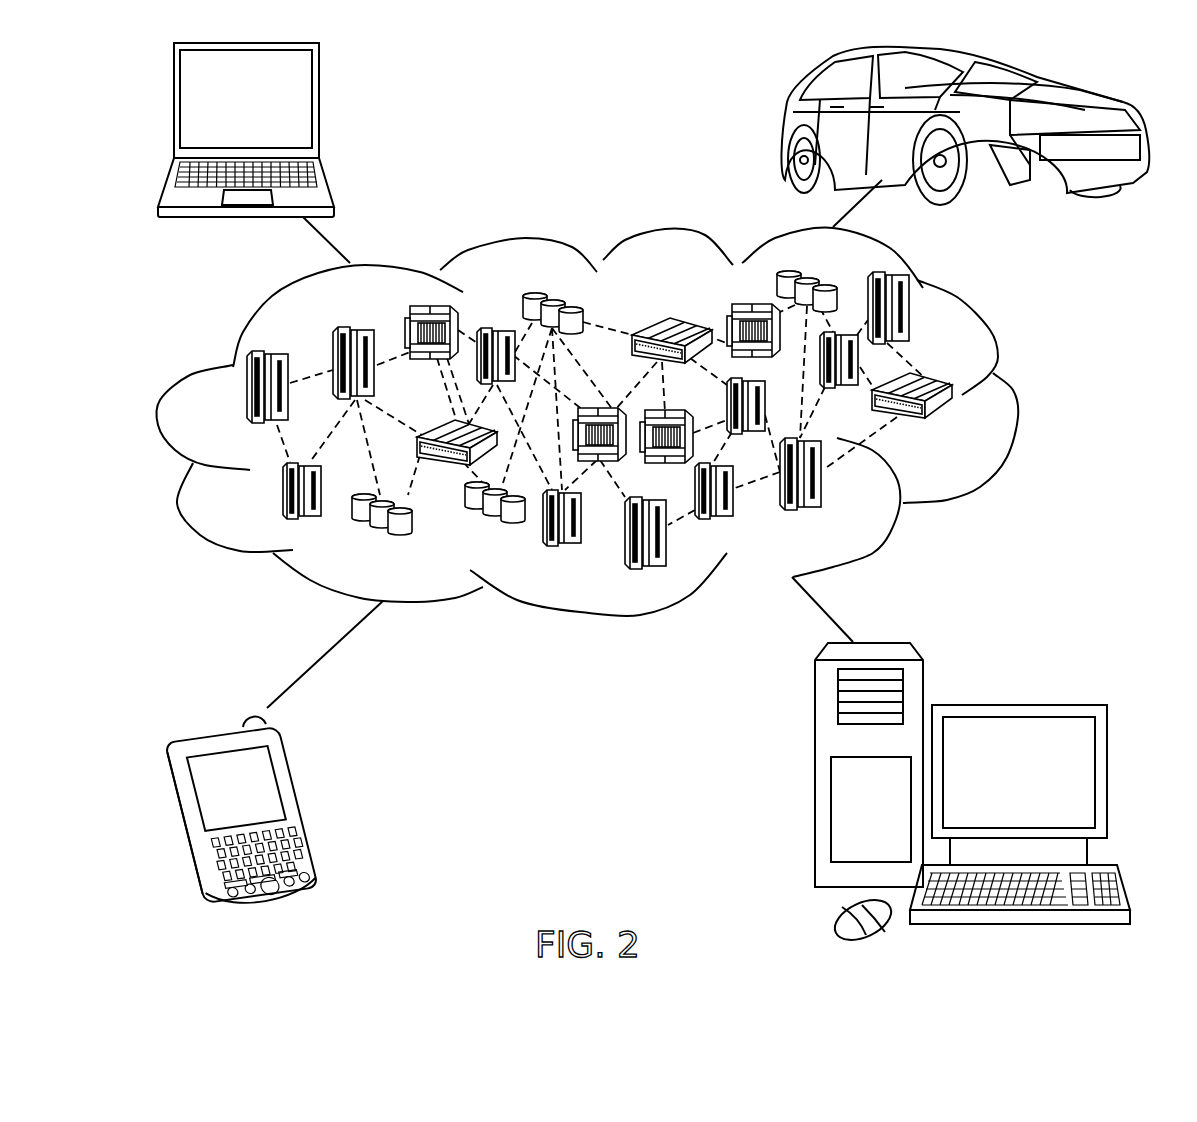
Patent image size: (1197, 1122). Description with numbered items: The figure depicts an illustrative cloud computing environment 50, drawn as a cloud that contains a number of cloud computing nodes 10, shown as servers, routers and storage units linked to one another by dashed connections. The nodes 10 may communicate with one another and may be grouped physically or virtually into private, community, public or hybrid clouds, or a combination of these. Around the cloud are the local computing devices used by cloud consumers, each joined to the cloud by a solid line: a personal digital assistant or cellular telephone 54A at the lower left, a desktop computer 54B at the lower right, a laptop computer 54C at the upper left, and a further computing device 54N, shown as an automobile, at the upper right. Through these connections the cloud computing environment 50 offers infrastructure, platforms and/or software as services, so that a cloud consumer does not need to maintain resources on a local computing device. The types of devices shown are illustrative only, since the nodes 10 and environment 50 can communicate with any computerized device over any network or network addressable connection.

The cloud computing node 10 is at (962, 435).
The cloud computing environment 50 is at (618, 422).
The personal digital assistant or cellular telephone 54A is at (308, 800).
The desktop computer 54B is at (1015, 705).
The laptop computer 54C is at (319, 108).
The computing device 54N is at (785, 127).